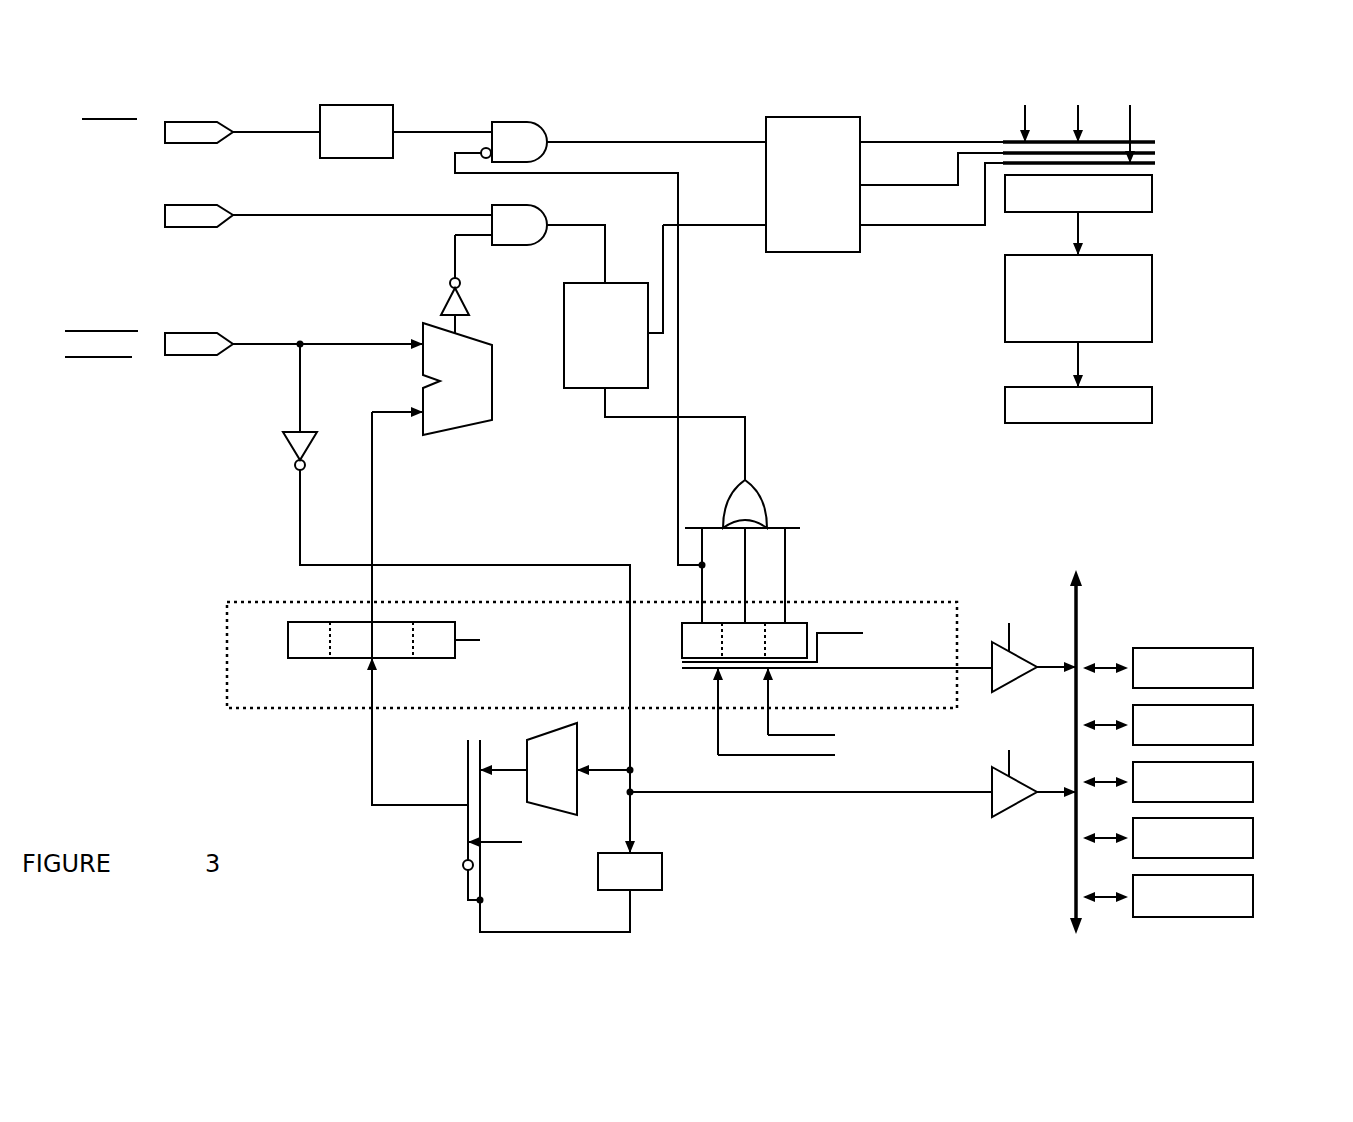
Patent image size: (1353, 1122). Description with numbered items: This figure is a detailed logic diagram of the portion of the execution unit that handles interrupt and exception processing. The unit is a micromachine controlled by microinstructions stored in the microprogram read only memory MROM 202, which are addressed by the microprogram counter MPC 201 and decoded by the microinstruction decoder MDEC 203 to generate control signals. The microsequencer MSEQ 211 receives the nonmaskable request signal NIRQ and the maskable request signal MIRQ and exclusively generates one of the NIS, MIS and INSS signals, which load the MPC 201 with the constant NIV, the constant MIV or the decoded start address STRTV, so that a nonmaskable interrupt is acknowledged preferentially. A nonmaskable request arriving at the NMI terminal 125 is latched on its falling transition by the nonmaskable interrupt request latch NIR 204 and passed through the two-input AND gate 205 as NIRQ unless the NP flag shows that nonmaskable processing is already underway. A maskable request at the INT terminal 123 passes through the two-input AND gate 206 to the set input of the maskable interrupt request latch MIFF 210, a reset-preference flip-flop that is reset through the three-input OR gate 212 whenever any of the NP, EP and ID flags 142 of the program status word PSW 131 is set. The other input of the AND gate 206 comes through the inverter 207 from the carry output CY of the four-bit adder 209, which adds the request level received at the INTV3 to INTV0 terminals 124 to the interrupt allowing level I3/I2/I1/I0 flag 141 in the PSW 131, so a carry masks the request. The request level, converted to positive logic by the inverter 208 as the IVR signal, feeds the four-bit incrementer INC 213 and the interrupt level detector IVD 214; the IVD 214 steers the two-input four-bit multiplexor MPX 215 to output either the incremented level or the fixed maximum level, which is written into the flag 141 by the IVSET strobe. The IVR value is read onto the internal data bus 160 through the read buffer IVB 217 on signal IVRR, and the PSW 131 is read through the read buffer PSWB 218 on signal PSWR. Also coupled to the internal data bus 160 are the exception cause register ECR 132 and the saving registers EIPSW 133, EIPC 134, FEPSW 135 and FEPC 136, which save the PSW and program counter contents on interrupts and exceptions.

The NMI terminal 125 is at (188, 121).
The INT terminal 123 is at (188, 204).
The INTV3, INTV2, INTV1 and INTV0 terminals 124 is at (188, 333).
The nonmaskable interrupt request latch (NIR) 204 is at (393, 112).
The two-input AND gate 205 is at (540, 128).
The two-input AND gate 206 is at (540, 212).
The inverter 207 is at (462, 298).
The inverter 208 is at (283, 445).
The 4-bit adder 209 is at (455, 436).
The maskable interrupt request latch (MIFF) 210 is at (580, 390).
The microsequencer (MSEQ) 211 is at (786, 253).
The three-input OR gate 212 is at (760, 487).
The 4-bit incrementer (INC) 213 is at (580, 752).
The interrupt level detector (IVD) 214 is at (640, 853).
The two-input 4-bit multiplexor (MPX) 215 is at (468, 827).
The read buffer (IVB) 217 is at (1012, 783).
The read buffer (PSWB) 218 is at (1012, 658).
The microprogram counter (MPC) 201 is at (1152, 191).
The microprogram read only memory (MROM) 202 is at (1152, 279).
The microinstruction decoder (MDEC) 203 is at (1152, 401).
The program status word (PSW) 131 is at (884, 602).
The I3/I2/I1/I0 flag 141 is at (288, 640).
The NP, EP and ID flags 142 is at (682, 640).
The exception cause register (ECR) 132 is at (1253, 660).
The saving register (EIPSW) 133 is at (1253, 717).
The saving register (EIPC) 134 is at (1253, 774).
The saving register (FEPSW) 135 is at (1253, 830).
The saving register (FEPC) 136 is at (1253, 888).
The internal data bus (ID bus) 160 is at (1072, 890).